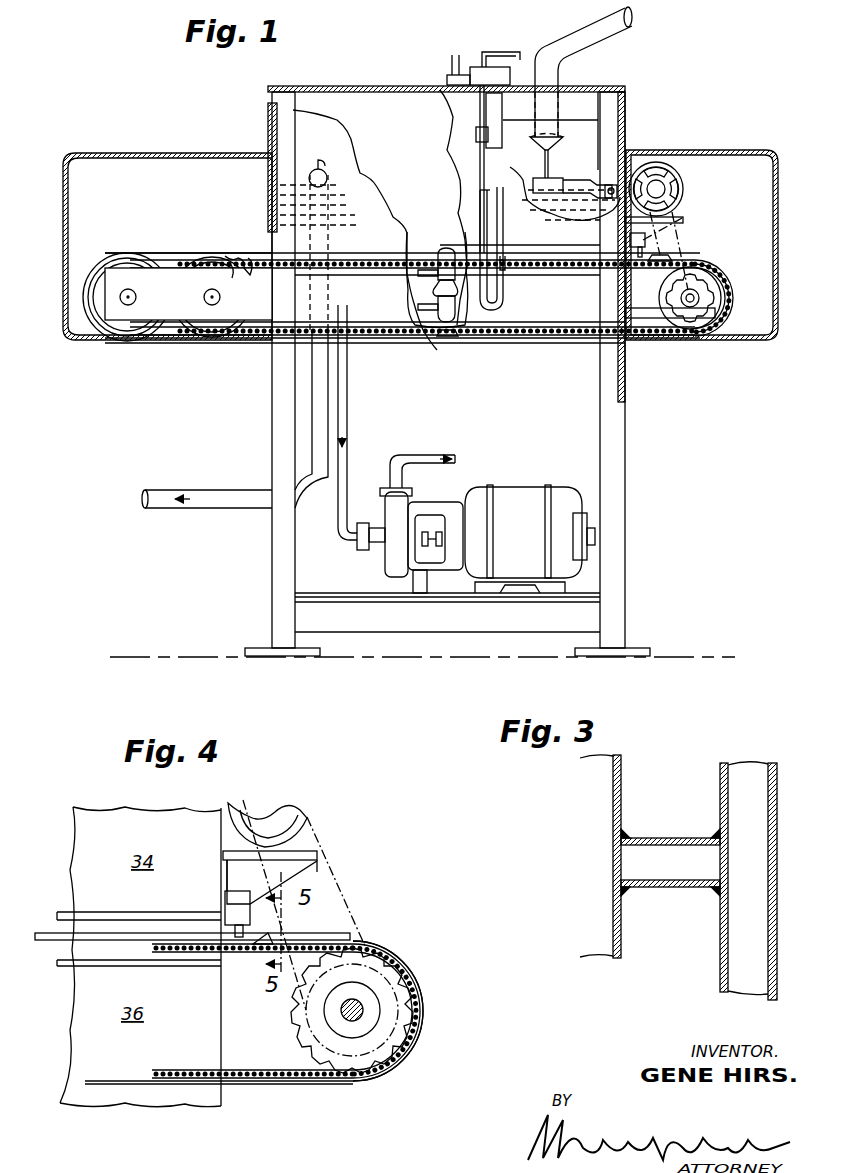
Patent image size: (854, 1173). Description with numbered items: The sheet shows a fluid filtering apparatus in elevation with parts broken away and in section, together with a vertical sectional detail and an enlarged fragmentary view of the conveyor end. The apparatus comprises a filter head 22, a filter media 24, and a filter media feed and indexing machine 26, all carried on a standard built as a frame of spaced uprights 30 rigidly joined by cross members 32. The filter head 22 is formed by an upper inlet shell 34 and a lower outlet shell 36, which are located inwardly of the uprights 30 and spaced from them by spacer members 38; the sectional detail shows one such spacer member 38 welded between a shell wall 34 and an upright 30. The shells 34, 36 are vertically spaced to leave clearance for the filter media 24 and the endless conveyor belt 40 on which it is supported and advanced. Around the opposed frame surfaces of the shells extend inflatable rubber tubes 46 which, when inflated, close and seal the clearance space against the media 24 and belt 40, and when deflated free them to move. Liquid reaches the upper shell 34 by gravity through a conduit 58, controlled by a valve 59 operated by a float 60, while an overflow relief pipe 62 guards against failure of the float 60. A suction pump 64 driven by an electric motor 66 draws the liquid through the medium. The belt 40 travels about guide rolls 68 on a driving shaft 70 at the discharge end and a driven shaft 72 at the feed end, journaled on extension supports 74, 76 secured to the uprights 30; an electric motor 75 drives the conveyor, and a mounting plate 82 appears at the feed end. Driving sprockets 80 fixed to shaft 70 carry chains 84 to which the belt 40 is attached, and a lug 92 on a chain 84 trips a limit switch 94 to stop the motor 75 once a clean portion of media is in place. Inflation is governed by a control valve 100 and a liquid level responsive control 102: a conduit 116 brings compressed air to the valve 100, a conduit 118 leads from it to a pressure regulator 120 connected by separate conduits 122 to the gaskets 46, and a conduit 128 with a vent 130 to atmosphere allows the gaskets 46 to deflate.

In FIG. 1, the filter head 22 is at (263, 220).
In FIG. 4, the filter head 22 is at (223, 1108).
In FIG. 1, the filter media 24 is at (152, 254).
In FIG. 1, the filter media feed and indexing machine 26 is at (728, 272).
In FIG. 4, the filter media feed and indexing machine 26 is at (425, 993).
In FIG. 1, the uprights 30 is at (272, 552).
In FIG. 3, the uprights 30 is at (720, 794).
In FIG. 1, the cross members 32 is at (578, 97).
In FIG. 1, the inlet fluid conductor or shell 34 is at (466, 182).
In FIG. 3, the inlet fluid conductor or shell 34 is at (621, 940).
In FIG. 1, the outlet fluid conductor or shell 36 is at (575, 332).
In FIG. 3, the spacer members 38 is at (668, 885).
In FIG. 1, the conveyor belt 40 is at (505, 340).
In FIG. 4, the conveyor belt 40 is at (105, 937).
In FIG. 1, the inflatable rubber tube 46 is at (578, 256).
In FIG. 4, the inflatable rubber tube 46 is at (67, 916).
In FIG. 1, the conduit 58 is at (628, 28).
In FIG. 1, the valve 59 is at (555, 146).
In FIG. 1, the float 60 is at (556, 181).
In FIG. 1, the overflow relief drain or pipe 62 is at (320, 182).
In FIG. 1, the suction or exhaust pump 64 is at (380, 577).
In FIG. 1, the electric motor 66 is at (522, 490).
In FIG. 1, the guide rolls 68 is at (232, 280).
In FIG. 4, the guide rolls 68 is at (288, 1012).
In FIG. 1, the driving shaft 70 is at (690, 308).
In FIG. 4, the driving shaft 70 is at (355, 1004).
In FIG. 1, the driven shaft 72 is at (215, 308).
In FIG. 1, the extension support 74 is at (652, 336).
In FIG. 1, the electric motor 75 is at (678, 186).
In FIG. 4, the electric motor 75 is at (265, 810).
In FIG. 1, the extension support 76 is at (170, 330).
In FIG. 1, the driving sprockets 80 is at (724, 287).
In FIG. 4, the driving sprockets 80 is at (290, 1022).
In FIG. 1, the mounting plate 82 is at (188, 294).
In FIG. 1, the chains 84 is at (262, 342).
In FIG. 4, the chains 84 is at (322, 1080).
In FIG. 1, the cam or lug 92 is at (238, 262).
In FIG. 4, the cam or lug 92 is at (266, 940).
In FIG. 1, the limit switch 94 is at (630, 240).
In FIG. 4, the limit switch 94 is at (226, 912).
In FIG. 1, the valve 100 is at (474, 63).
In FIG. 1, the liquid level responsive control 102 is at (452, 250).
In FIG. 1, the conduit 116 is at (500, 50).
In FIG. 1, the conduit 118 is at (478, 108).
In FIG. 1, the pressure regulator 120 is at (476, 135).
In FIG. 1, the conduits 122 is at (480, 208).
In FIG. 1, the conduit 128 is at (526, 162).
In FIG. 1, the vent 130 is at (446, 77).